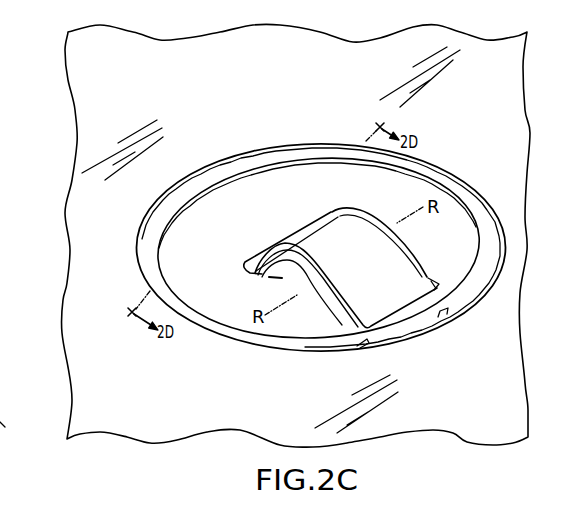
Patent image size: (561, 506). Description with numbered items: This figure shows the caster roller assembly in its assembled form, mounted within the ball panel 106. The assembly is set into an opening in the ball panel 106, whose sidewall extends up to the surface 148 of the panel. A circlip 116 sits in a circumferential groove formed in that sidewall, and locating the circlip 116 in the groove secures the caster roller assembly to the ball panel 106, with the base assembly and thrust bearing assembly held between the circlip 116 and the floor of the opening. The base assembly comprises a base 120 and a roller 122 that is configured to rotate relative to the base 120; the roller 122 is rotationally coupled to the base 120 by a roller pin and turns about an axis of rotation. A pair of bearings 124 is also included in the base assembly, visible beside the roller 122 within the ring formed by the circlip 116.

The ball panel 106 is at (82, 78).
The surface 148 is at (211, 98).
The circlip 116 is at (455, 182).
The base 120 is at (320, 190).
The roller 122 is at (378, 271).
The bearings 124 is at (282, 277).